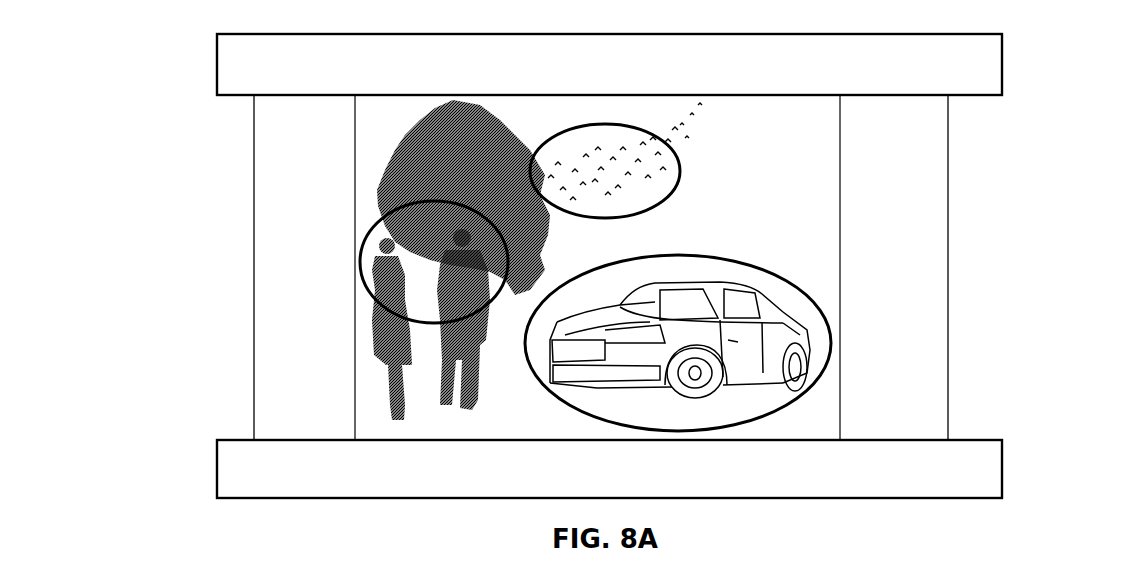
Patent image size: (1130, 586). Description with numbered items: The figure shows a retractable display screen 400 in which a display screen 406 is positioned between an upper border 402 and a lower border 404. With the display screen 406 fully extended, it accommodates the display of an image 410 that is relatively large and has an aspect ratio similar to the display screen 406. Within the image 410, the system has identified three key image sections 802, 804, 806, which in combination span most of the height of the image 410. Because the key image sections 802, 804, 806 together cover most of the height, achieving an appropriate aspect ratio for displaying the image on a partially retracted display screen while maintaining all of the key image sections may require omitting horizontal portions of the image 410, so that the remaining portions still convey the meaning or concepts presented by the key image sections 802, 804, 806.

The retractable display screen 400 is at (98, 57).
The upper border 402 is at (217, 52).
The lower border 404 is at (217, 467).
The display screen 406 is at (254, 217).
The image 410 is at (840, 198).
The key image section 802 is at (357, 262).
The key image section 804 is at (806, 292).
The key image section 806 is at (680, 165).